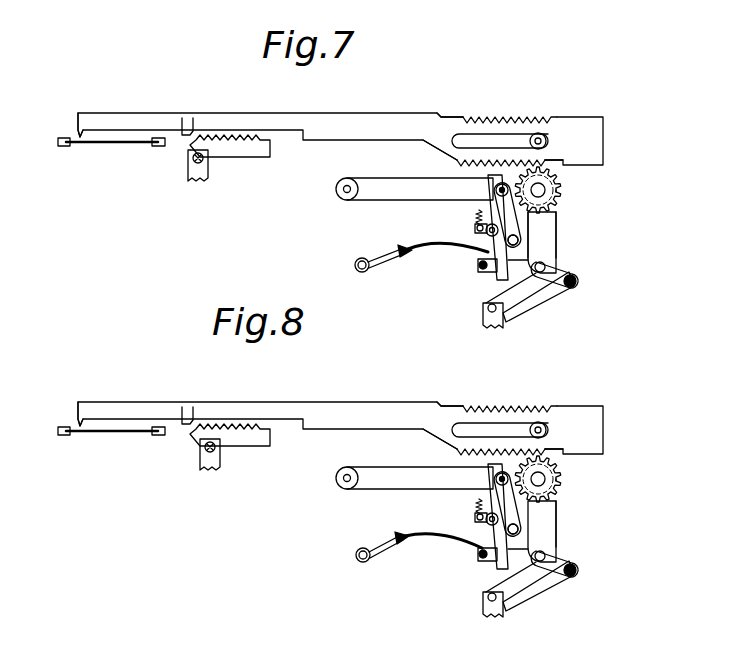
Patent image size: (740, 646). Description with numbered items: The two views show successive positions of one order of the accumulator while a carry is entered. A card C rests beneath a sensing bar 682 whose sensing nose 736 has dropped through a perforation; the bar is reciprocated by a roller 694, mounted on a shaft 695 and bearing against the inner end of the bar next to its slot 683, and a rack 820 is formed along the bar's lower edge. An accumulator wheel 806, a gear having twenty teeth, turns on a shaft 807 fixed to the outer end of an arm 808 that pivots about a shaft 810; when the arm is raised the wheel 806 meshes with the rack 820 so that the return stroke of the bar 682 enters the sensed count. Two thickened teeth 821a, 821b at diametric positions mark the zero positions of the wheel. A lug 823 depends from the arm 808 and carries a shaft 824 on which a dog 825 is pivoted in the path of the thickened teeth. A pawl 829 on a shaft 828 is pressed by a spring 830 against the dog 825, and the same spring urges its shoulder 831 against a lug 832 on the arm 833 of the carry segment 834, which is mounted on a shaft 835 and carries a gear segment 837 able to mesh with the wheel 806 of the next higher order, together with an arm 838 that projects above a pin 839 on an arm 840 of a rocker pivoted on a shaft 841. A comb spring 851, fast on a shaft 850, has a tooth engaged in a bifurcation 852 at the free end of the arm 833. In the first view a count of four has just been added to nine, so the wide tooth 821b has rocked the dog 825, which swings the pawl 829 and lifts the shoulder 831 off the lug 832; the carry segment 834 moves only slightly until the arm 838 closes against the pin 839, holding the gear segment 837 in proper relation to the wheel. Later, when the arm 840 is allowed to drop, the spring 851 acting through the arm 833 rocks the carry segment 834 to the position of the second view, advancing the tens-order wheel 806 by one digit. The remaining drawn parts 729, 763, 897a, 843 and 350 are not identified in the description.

In FIG. 7, the sensing bar 682 is at (320, 116).
In FIG. 8, the sensing bar 682 is at (340, 417).
In FIG. 7, the sensing nose 736 is at (76, 129).
In FIG. 8, the sensing nose 736 is at (54, 414).
In FIG. 7, the card C is at (126, 143).
In FIG. 8, the card C is at (111, 442).
In FIG. 7, the shoulder 763 is at (446, 113).
In FIG. 8, the shoulder 763 is at (429, 393).
In FIG. 7, the upper rack 729 is at (522, 116).
In FIG. 8, the upper rack 729 is at (510, 396).
In FIG. 7, the dog 825 is at (480, 166).
In FIG. 8, the dog 825 is at (497, 467).
In FIG. 7, the rack 820 is at (455, 158).
In FIG. 7, the slot 683 is at (455, 135).
In FIG. 8, the slot 683 is at (475, 423).
In FIG. 7, the roller 694 is at (541, 134).
In FIG. 8, the roller 694 is at (561, 410).
In FIG. 7, the shaft 695 is at (546, 145).
In FIG. 8, the shaft 695 is at (595, 419).
In FIG. 7, the shaft 810 is at (337, 190).
In FIG. 8, the shaft 810 is at (332, 478).
In FIG. 7, the arm 808 is at (388, 199).
In FIG. 8, the arm 808 is at (420, 487).
In FIG. 7, the link lever 897a is at (497, 192).
In FIG. 8, the link lever 897a is at (468, 482).
In FIG. 7, the shaft 824 is at (507, 242).
In FIG. 8, the shaft 824 is at (584, 529).
In FIG. 7, the shoulder 831 is at (480, 284).
In FIG. 8, the shoulder 831 is at (498, 516).
In FIG. 7, the lug 832 is at (493, 272).
In FIG. 8, the lug 832 is at (476, 568).
In FIG. 7, the bifurcation 852 is at (477, 265).
In FIG. 8, the bifurcation 852 is at (458, 561).
In FIG. 7, the shaft 828 is at (476, 229).
In FIG. 8, the shaft 828 is at (470, 520).
In FIG. 7, the spring 830 is at (477, 214).
In FIG. 8, the spring 830 is at (458, 504).
In FIG. 7, the accumulator wheel 806 is at (562, 190).
In FIG. 8, the accumulator wheel 806 is at (584, 479).
In FIG. 8, the shaft 807 is at (579, 481).
In FIG. 7, the thickened tooth 821a is at (565, 176).
In FIG. 8, the thickened tooth 821a is at (605, 454).
In FIG. 7, the thickened tooth 821b is at (562, 202).
In FIG. 8, the thickened tooth 821b is at (618, 493).
In FIG. 7, the gear segment 837 is at (555, 236).
In FIG. 7, the lug 823 is at (560, 236).
In FIG. 8, the lug 823 is at (588, 524).
In FIG. 7, the carry segment 834 is at (538, 246).
In FIG. 8, the carry segment 834 is at (570, 529).
In FIG. 7, the arm 838 is at (562, 273).
In FIG. 8, the arm 838 is at (583, 564).
In FIG. 7, the shaft 835 is at (548, 270).
In FIG. 8, the shaft 835 is at (510, 569).
In FIG. 7, the pin 839 is at (577, 284).
In FIG. 8, the pin 839 is at (599, 574).
In FIG. 7, the arm 840 is at (532, 296).
In FIG. 8, the arm 840 is at (559, 586).
In FIG. 7, the bracket 843 is at (505, 322).
In FIG. 8, the bracket 843 is at (481, 615).
In FIG. 7, the shaft 841 is at (490, 312).
In FIG. 8, the shaft 841 is at (468, 602).
In FIG. 7, the arm 833 is at (486, 303).
In FIG. 8, the arm 833 is at (549, 562).
In FIG. 7, the pawl 829 is at (465, 242).
In FIG. 8, the pawl 829 is at (443, 532).
In FIG. 7, the comb spring 851 is at (413, 252).
In FIG. 8, the comb spring 851 is at (392, 550).
In FIG. 7, the rod eye 350 is at (354, 265).
In FIG. 8, the shaft 850 is at (341, 556).